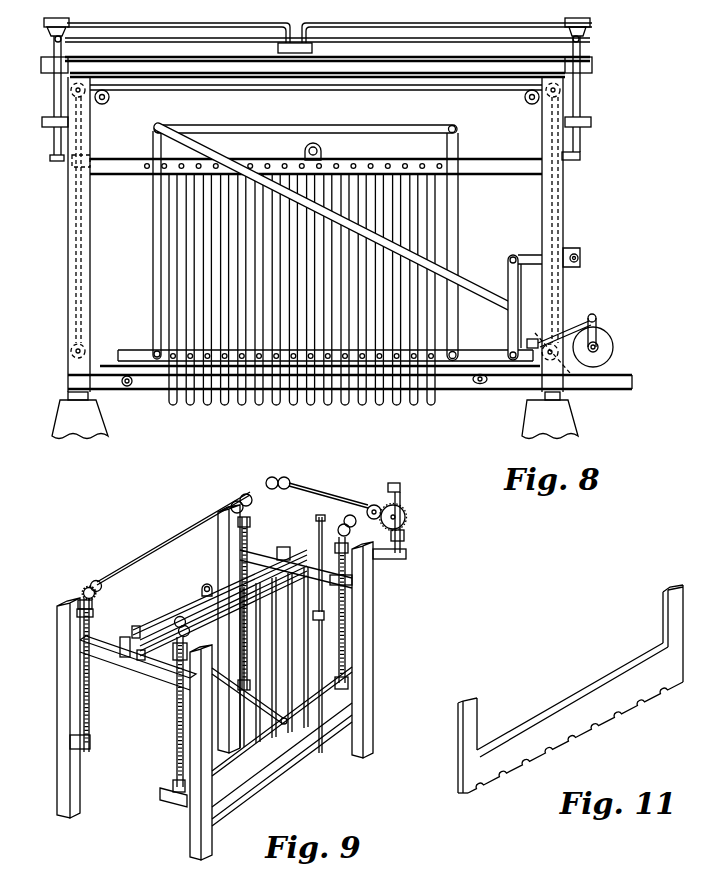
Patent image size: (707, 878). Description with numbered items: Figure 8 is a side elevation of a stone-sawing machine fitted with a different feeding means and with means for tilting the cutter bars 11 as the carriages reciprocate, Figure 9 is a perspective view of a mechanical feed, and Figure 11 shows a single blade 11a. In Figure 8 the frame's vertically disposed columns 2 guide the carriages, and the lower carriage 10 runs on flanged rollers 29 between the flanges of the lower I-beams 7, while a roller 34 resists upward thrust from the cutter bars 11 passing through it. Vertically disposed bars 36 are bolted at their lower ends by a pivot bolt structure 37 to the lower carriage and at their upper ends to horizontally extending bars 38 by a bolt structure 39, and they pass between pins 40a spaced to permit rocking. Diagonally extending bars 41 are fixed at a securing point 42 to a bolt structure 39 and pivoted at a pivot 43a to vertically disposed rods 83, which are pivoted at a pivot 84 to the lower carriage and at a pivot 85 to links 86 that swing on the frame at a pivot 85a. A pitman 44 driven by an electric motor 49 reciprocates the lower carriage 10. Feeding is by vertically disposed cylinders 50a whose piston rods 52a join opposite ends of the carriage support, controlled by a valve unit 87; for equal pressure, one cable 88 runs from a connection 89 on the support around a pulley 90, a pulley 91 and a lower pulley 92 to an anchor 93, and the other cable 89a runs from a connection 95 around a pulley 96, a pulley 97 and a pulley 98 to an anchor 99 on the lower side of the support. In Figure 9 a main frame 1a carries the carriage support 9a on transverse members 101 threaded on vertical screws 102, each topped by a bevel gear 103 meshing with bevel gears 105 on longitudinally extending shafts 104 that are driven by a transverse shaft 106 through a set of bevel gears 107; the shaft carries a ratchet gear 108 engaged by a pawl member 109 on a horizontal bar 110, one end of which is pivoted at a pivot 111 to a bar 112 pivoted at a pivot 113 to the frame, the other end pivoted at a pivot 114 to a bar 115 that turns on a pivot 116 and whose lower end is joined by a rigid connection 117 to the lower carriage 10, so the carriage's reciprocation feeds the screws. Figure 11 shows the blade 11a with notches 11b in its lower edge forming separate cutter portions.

In FIG. 8, the columns 2 is at (68, 262).
In FIG. 8, the lower I-beams 7 is at (103, 378).
In FIG. 8, the lower carriage 10 is at (486, 351).
In FIG. 8, the cutter bars 11 is at (178, 253).
In FIG. 9, the cutter bars 11 is at (258, 663).
In FIG. 8, the flanged rollers 29 is at (127, 387).
In FIG. 8, the roller 34 is at (322, 151).
In FIG. 9, the roller 34 is at (209, 585).
In FIG. 8, the vertically disposed bars 36 is at (153, 223).
In FIG. 8, the pivot bolt structure 37 is at (155, 365).
In FIG. 8, the horizontally extending bars 38 is at (345, 125).
In FIG. 8, the bolt structure 39 is at (455, 125).
In FIG. 8, the pins 40a is at (458, 160).
In FIG. 8, the diagonally extending bars 41 is at (243, 168).
In FIG. 8, the securing point 42 is at (161, 125).
In FIG. 8, the pivot 43a is at (508, 300).
In FIG. 8, the pitman 44 is at (585, 316).
In FIG. 8, the electric motor 49 is at (612, 345).
In FIG. 8, the cylinders 50a is at (590, 47).
In FIG. 8, the piston rods 52a is at (581, 140).
In FIG. 8, the vertically disposed rods 83 is at (508, 325).
In FIG. 8, the pivot 84 is at (524, 372).
In FIG. 8, the pivot 85 is at (513, 256).
In FIG. 8, the pivot 85a is at (580, 258).
In FIG. 8, the links 86 is at (537, 259).
In FIG. 8, the valve unit 87 is at (312, 47).
In FIG. 8, the cable 88 is at (218, 80).
In FIG. 8, the connection 89 is at (67, 145).
In FIG. 8, the cable 89a is at (457, 88).
In FIG. 8, the pulley 90 is at (66, 86).
In FIG. 8, the pulley 91 is at (566, 89).
In FIG. 8, the lower pulley 92 is at (574, 376).
In FIG. 8, the anchor 93 is at (563, 180).
In FIG. 8, the connection 95 is at (580, 155).
In FIG. 8, the pulley 96 is at (526, 99).
In FIG. 8, the pulley 97 is at (110, 99).
In FIG. 8, the pulley 98 is at (86, 348).
In FIG. 8, the anchor 99 is at (92, 178).
In FIG. 9, the main frame 1a is at (190, 810).
In FIG. 9, the carriage support 9a is at (157, 620).
In FIG. 9, the transverse members 101 is at (122, 668).
In FIG. 9, the vertical screws 102 is at (90, 710).
In FIG. 9, the bevel gear 103 is at (80, 590).
In FIG. 9, the longitudinally extending shafts 104 is at (152, 551).
In FIG. 9, the bevel gears 105 is at (95, 582).
In FIG. 9, the transverse shaft 106 is at (323, 490).
In FIG. 9, the set of bevel gears 107 is at (282, 477).
In FIG. 9, the ratchet gear 108 is at (405, 510).
In FIG. 9, the pawl member 109 is at (390, 482).
In FIG. 9, the horizontal bar 110 is at (373, 505).
In FIG. 9, the pivot 111 is at (401, 486).
In FIG. 9, the bar 112 is at (404, 532).
In FIG. 9, the pivot 113 is at (406, 552).
In FIG. 9, the pivot 114 is at (320, 530).
In FIG. 9, the bar 115 is at (318, 638).
In FIG. 9, the pivot 116 is at (313, 617).
In FIG. 9, the rigid connection 117 is at (290, 709).
In FIG. 11, the blade 11a is at (545, 722).
In FIG. 11, the notches 11b is at (602, 713).